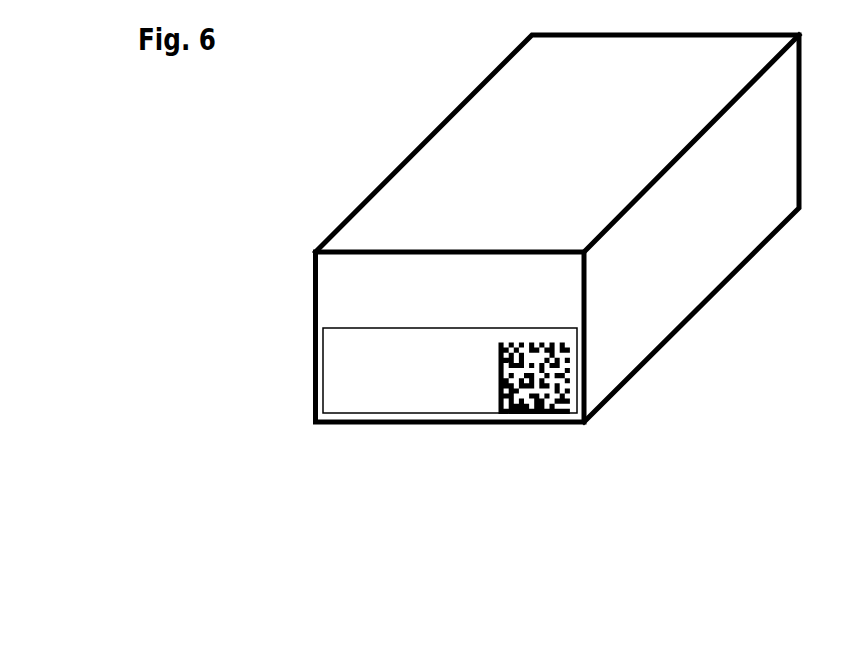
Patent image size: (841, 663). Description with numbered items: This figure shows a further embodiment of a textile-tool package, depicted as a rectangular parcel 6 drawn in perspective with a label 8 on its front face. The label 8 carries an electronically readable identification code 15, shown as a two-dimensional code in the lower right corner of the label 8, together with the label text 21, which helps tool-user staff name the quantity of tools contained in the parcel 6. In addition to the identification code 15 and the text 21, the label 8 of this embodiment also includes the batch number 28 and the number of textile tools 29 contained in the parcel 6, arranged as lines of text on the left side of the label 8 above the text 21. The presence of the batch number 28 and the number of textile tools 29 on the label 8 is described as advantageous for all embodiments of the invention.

The parcel 6 is at (653, 258).
The label 8 is at (445, 390).
The electronically readable identification code 15 is at (562, 393).
The number of textile tools 29 is at (326, 355).
The batch number 28 is at (328, 378).
The label text 21 is at (330, 405).